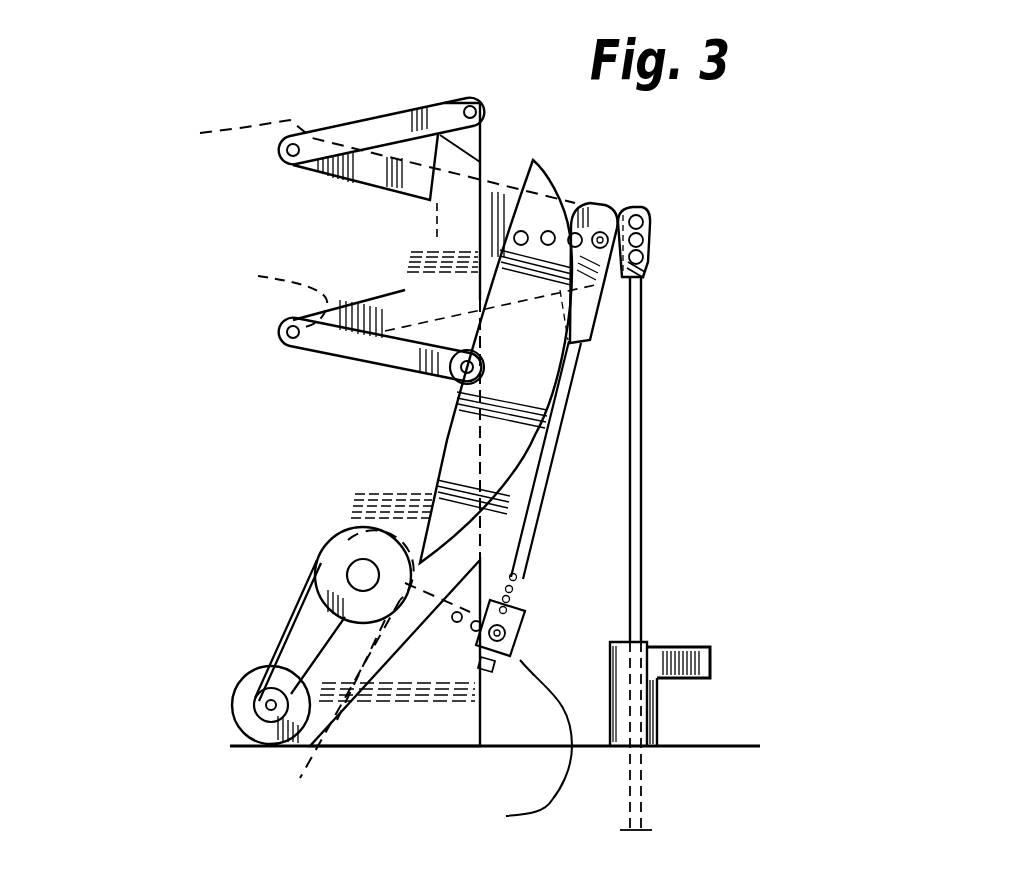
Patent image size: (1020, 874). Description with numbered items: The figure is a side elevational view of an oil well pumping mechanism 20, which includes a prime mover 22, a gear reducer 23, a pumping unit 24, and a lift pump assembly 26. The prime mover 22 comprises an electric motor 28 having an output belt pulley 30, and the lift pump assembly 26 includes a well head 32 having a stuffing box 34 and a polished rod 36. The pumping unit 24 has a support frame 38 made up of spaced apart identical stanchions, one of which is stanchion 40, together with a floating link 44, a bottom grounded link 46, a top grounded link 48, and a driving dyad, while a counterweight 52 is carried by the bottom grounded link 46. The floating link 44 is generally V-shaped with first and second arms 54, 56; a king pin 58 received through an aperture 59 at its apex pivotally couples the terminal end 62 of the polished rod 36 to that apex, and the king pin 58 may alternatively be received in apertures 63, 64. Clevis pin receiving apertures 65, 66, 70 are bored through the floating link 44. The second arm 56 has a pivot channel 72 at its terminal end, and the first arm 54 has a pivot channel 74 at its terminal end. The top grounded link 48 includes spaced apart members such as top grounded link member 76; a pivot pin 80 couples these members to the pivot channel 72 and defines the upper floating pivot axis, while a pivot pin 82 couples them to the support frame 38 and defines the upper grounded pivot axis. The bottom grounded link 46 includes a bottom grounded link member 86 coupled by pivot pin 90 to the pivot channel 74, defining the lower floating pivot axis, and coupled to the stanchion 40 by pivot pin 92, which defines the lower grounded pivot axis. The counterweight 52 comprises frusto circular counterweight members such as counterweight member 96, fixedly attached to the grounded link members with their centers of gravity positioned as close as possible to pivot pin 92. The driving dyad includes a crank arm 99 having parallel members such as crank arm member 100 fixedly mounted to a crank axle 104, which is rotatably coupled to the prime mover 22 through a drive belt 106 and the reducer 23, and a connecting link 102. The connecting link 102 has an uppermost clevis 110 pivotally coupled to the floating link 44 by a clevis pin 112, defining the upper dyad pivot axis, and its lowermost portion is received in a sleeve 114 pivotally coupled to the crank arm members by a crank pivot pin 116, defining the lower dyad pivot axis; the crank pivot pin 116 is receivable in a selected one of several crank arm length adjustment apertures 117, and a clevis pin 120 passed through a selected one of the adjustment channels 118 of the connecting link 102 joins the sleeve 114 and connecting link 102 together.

The oil well pumping mechanism 20 is at (755, 234).
The prime mover 22 is at (232, 676).
The gear reducer 23 is at (347, 538).
The pumping unit 24 is at (218, 432).
The lift pump assembly 26 is at (712, 663).
The electric motor 28 is at (233, 699).
The output belt pulley 30 is at (262, 712).
The well head 32 is at (657, 718).
The stuffing box 34 is at (712, 678).
The polished rod 36 is at (710, 553).
The support frame 38 is at (485, 155).
The stanchion 40 is at (538, 172).
The floating link 44 is at (630, 205).
The bottom grounded link 46 is at (324, 356).
The top grounded link 48 is at (352, 124).
The counterweight 52 is at (513, 478).
The first arm 54 is at (370, 300).
The second arm 56 is at (390, 188).
The king pin 58 is at (650, 253).
The aperture 59 is at (650, 250).
The terminal end 62 is at (650, 268).
The aperture 63 is at (648, 225).
The aperture 64 is at (645, 274).
The clevis pin receiving aperture 65 is at (640, 207).
The clevis pin receiving aperture 66 is at (600, 203).
The clevis pin receiving aperture 70 is at (578, 204).
The pivot channel 72 is at (366, 157).
The pivot channel 74 is at (271, 290).
The top grounded link member 76 is at (401, 113).
The pivot pin 80 is at (285, 158).
The pivot pin 82 is at (483, 110).
The bottom grounded link member 86 is at (363, 358).
The pivot pin 90 is at (280, 329).
The pivot pin 92 is at (457, 382).
The counterweight member 96 is at (535, 375).
The crank arm 99 is at (387, 637).
The crank arm member 100 is at (515, 746).
The connecting link 102 is at (560, 437).
The crank axle 104 is at (340, 576).
The drive belt 106 is at (305, 621).
The clevis 110 is at (590, 300).
The clevis pin 112 is at (605, 208).
The sleeve 114 is at (522, 647).
The crank pivot pin 116 is at (666, 640).
The crank arm length adjustment aperture 117 is at (478, 636).
The adjustment channel 118 is at (508, 600).
The clevis pin 120 is at (515, 628).